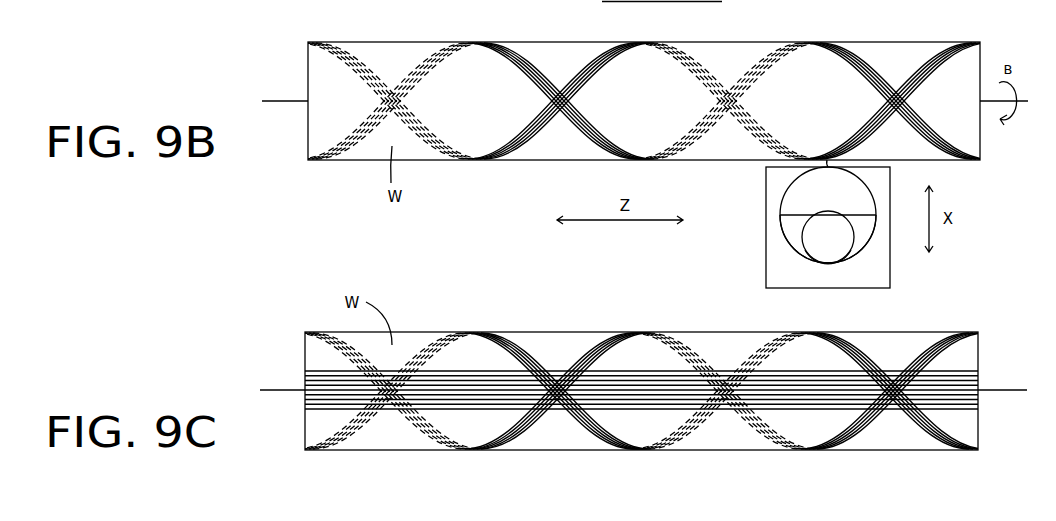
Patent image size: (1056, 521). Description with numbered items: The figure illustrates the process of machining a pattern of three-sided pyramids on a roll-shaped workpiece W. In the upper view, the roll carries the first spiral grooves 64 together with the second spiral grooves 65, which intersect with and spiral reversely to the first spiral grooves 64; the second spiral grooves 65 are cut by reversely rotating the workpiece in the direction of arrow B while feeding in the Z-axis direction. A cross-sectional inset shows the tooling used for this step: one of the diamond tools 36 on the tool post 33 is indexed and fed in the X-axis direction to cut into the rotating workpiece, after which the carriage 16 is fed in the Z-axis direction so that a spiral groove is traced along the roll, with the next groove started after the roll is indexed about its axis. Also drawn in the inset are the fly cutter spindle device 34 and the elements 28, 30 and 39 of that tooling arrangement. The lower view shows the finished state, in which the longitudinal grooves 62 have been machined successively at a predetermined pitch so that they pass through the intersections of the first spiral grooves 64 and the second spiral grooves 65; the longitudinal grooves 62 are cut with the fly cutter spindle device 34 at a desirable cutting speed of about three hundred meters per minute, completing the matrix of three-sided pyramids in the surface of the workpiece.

In FIG. 9B, the carriage 16 is at (759, 265).
In FIG. 9B, the hose 28 is at (879, 237).
In FIG. 9B, the lower hose region 30 is at (793, 227).
In FIG. 9B, the tool post 33 is at (800, 192).
In FIG. 9B, the fly cutter spindle device 34 is at (817, 244).
In FIG. 9B, the diamond tool 36 is at (828, 167).
In FIG. 9B, the inner passage 39 is at (828, 262).
In FIG. 9C, the longitudinal grooves 62 is at (500, 370).
In FIG. 9B, the first spiral grooves 64 is at (922, 57).
In FIG. 9C, the first spiral grooves 64 is at (583, 348).
In FIG. 9B, the second spiral grooves 65 is at (865, 57).
In FIG. 9C, the second spiral grooves 65 is at (528, 348).